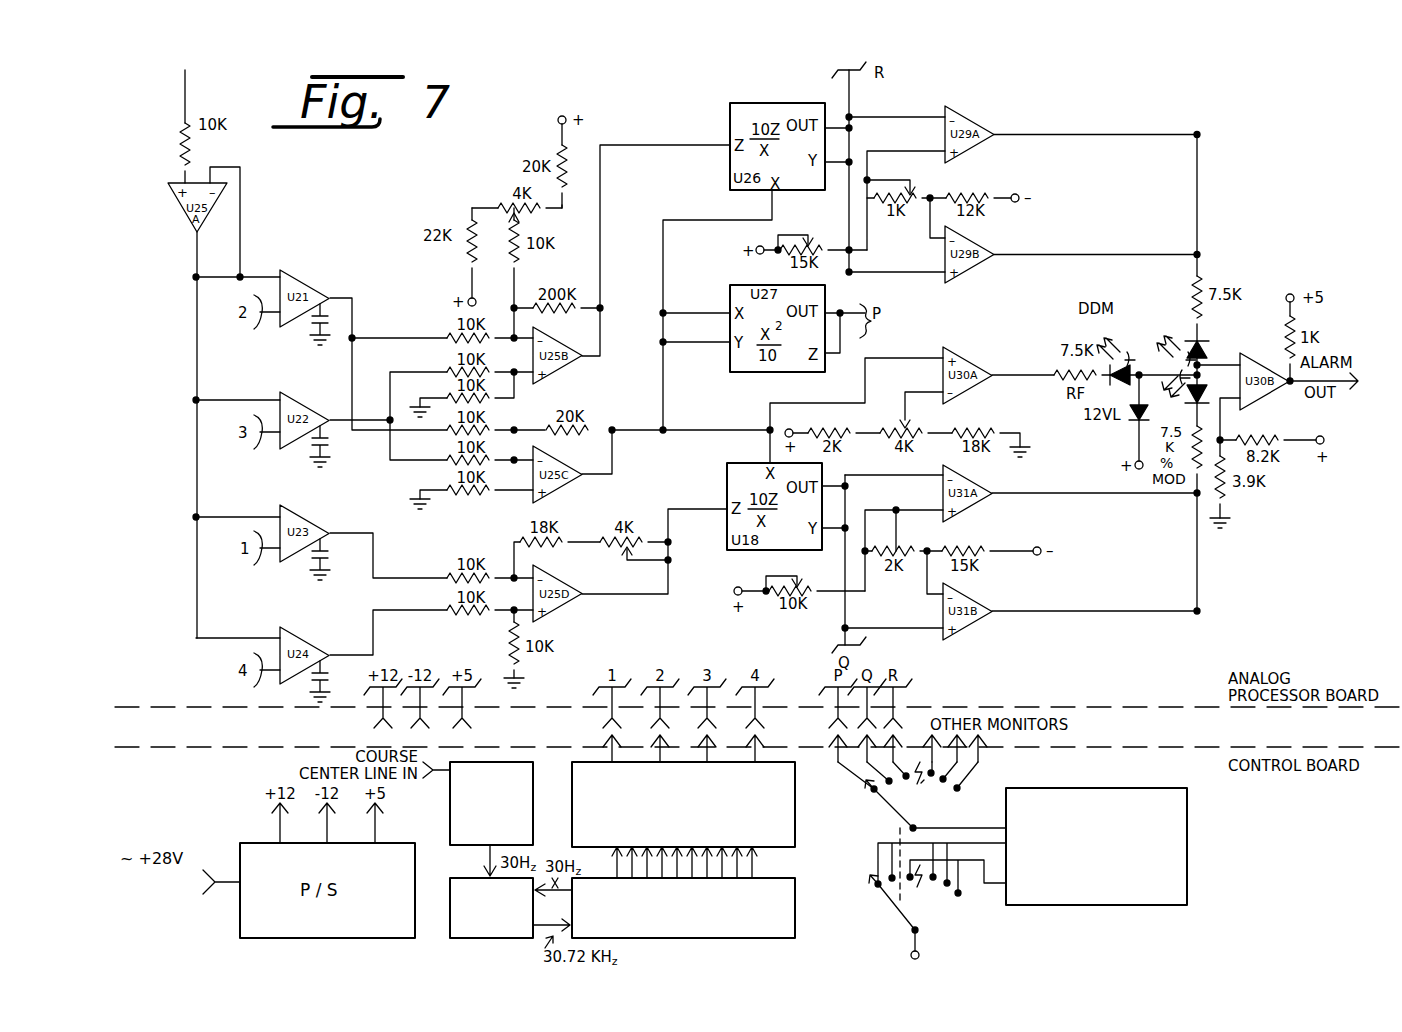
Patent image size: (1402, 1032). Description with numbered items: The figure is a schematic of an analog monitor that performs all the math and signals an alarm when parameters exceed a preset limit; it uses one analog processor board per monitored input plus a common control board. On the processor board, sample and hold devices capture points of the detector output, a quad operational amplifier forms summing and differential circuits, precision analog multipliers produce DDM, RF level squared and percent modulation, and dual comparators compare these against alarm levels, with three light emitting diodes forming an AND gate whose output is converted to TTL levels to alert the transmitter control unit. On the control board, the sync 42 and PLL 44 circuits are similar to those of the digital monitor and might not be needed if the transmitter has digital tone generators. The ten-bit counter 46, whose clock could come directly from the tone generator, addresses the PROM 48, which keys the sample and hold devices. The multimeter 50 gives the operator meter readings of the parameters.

The sync circuit 42 is at (450, 807).
The PLL circuit 44 is at (460, 946).
The 10 bit counter 46 is at (795, 920).
The PROM 48 is at (795, 820).
The multimeter 50 is at (1187, 826).